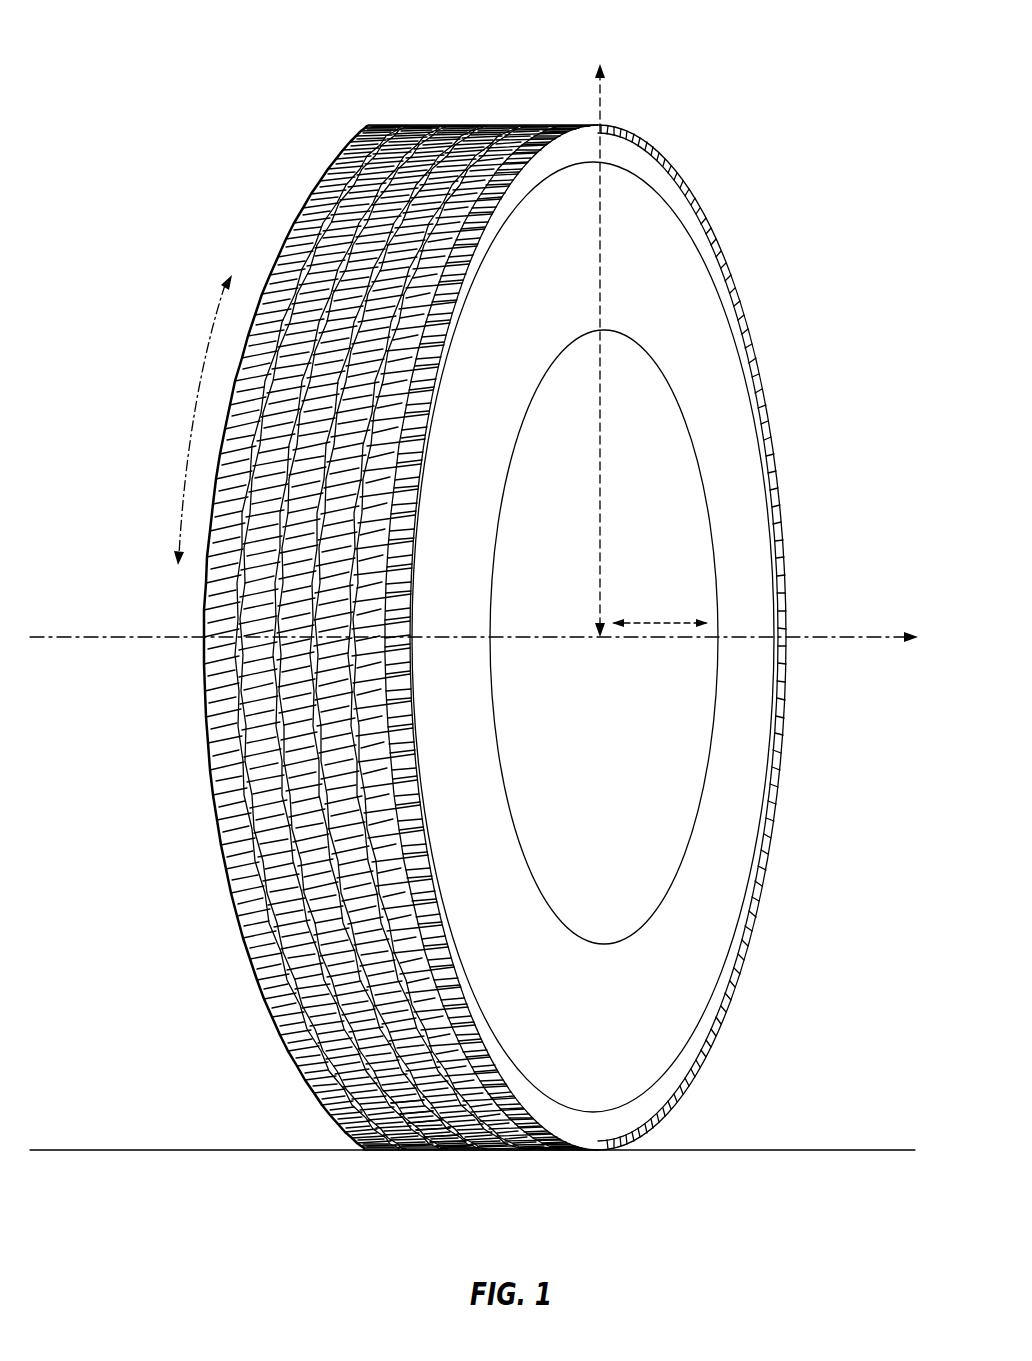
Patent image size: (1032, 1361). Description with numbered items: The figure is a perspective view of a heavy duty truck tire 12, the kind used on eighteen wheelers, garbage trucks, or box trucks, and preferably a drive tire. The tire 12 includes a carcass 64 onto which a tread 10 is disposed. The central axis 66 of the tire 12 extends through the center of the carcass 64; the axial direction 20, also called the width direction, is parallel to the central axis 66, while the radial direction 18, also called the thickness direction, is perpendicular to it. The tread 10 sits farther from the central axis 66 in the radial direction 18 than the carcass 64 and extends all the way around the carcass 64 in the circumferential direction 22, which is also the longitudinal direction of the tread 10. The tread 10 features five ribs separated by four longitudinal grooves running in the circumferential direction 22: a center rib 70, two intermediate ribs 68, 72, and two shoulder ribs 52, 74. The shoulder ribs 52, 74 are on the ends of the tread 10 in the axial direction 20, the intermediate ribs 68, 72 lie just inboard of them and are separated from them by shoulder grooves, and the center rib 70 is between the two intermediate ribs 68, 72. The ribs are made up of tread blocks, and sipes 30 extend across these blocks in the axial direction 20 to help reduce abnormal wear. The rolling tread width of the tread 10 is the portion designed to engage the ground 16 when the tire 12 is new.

The tire 12 is at (272, 52).
The tread 10 is at (272, 790).
The ground 16 is at (786, 1150).
The radial direction 18 is at (603, 104).
The axial direction 20 is at (660, 622).
The circumferential direction 22 is at (200, 405).
The sipes 30 is at (253, 582).
The shoulder rib 52 is at (247, 940).
The carcass 64 is at (713, 325).
The central axis 66 is at (840, 648).
The intermediate rib 68 is at (364, 1150).
The center rib 70 is at (404, 1150).
The intermediate rib 72 is at (417, 1008).
The shoulder rib 74 is at (457, 1070).